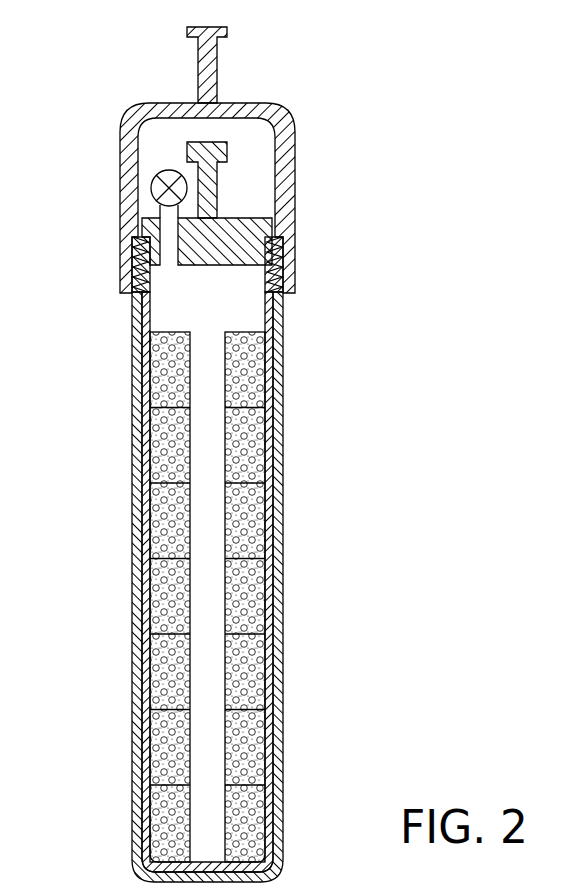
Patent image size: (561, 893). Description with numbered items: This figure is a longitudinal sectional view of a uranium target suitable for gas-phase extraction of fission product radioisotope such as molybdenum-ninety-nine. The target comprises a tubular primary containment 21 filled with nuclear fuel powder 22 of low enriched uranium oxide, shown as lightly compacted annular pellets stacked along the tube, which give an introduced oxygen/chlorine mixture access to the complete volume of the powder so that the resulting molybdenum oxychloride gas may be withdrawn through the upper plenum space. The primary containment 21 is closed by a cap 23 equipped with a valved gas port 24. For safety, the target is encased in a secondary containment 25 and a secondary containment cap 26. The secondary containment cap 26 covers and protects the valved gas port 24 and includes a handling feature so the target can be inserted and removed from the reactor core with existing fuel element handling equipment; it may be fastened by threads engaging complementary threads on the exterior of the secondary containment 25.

The primary containment 21 is at (270, 438).
The nuclear fuel powder 22 is at (247, 603).
The cap 23 is at (268, 225).
The valved gas port 24 is at (152, 180).
The secondary containment 25 is at (138, 463).
The secondary containment cap 26 is at (127, 217).